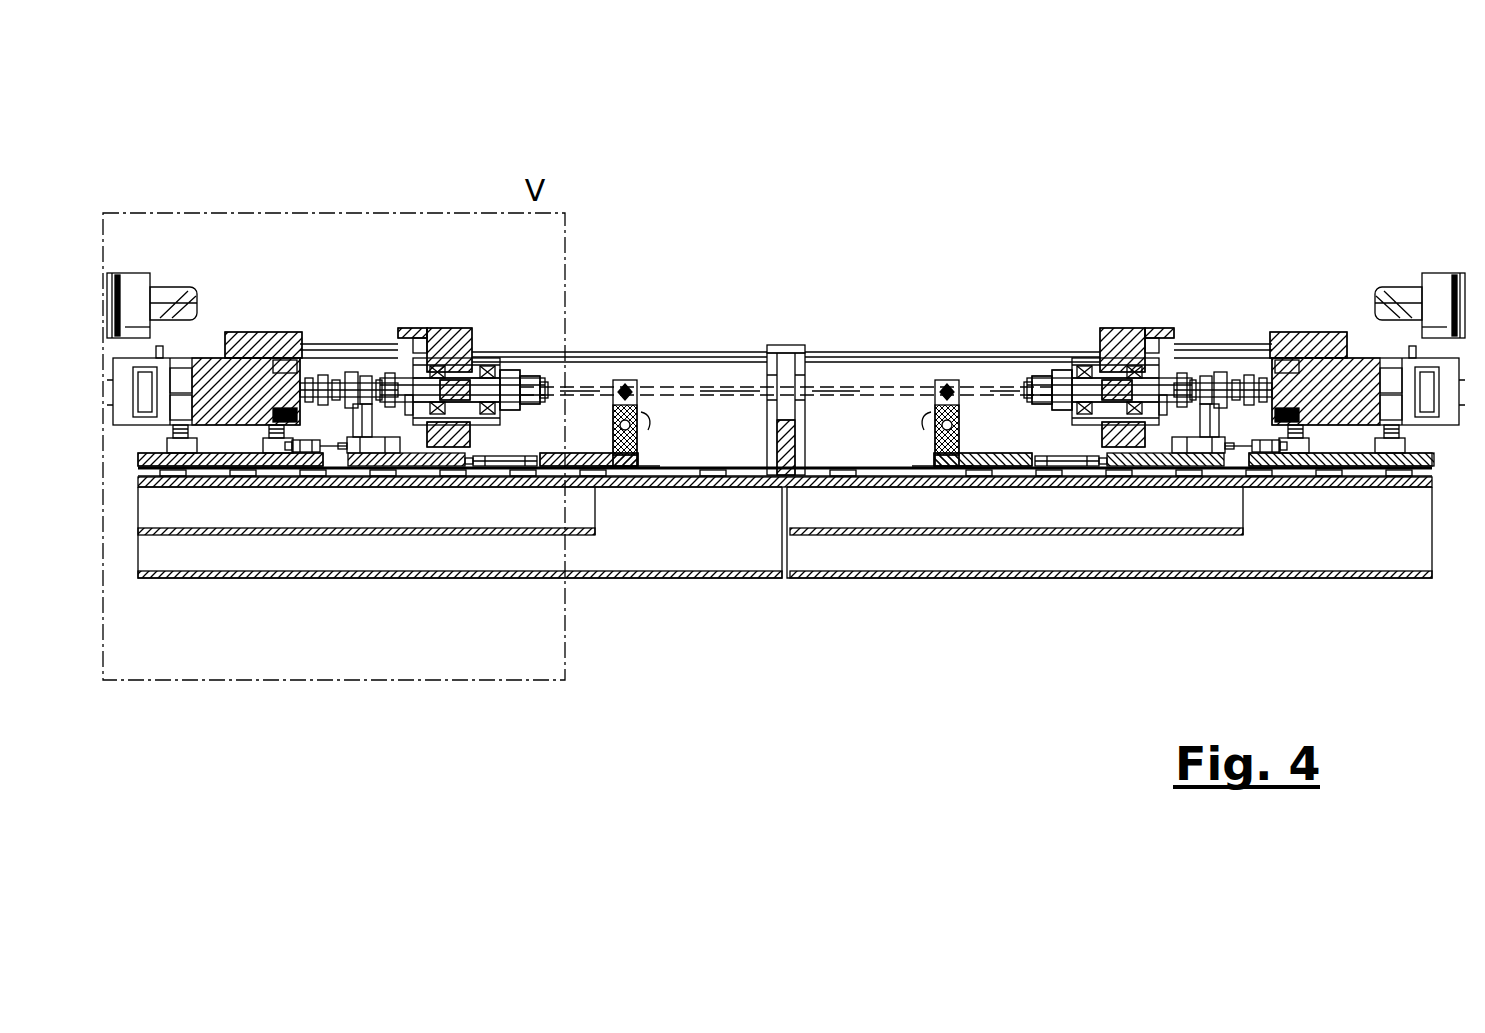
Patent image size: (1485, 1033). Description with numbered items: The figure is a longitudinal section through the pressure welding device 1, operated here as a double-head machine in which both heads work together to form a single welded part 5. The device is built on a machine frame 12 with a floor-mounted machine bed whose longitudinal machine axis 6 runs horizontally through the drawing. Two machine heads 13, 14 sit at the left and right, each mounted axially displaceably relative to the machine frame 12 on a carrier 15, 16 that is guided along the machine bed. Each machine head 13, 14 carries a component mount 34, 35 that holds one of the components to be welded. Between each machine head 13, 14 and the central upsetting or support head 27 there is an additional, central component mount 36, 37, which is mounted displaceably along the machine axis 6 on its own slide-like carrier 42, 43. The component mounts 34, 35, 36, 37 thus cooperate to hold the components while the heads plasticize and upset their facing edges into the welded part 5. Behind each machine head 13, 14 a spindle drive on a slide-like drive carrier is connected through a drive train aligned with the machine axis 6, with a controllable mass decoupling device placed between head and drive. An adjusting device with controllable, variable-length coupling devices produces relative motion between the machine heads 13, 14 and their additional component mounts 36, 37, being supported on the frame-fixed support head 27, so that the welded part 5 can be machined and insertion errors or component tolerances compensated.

The pressure welding device 1 is at (1050, 218).
The welded part 5 is at (827, 385).
The machine axis 6 is at (906, 388).
The machine frame 12 is at (650, 538).
The machine head 13 is at (450, 335).
The machine head 14 is at (1130, 340).
The carrier 15 is at (407, 466).
The carrier 16 is at (1157, 478).
The upsetting or support head 27 is at (780, 365).
The component mount 34 is at (510, 368).
The component mount 35 is at (1065, 368).
The additional component mount 36 is at (620, 380).
The additional component mount 37 is at (938, 380).
The carrier 42 is at (571, 462).
The carrier 43 is at (1001, 462).